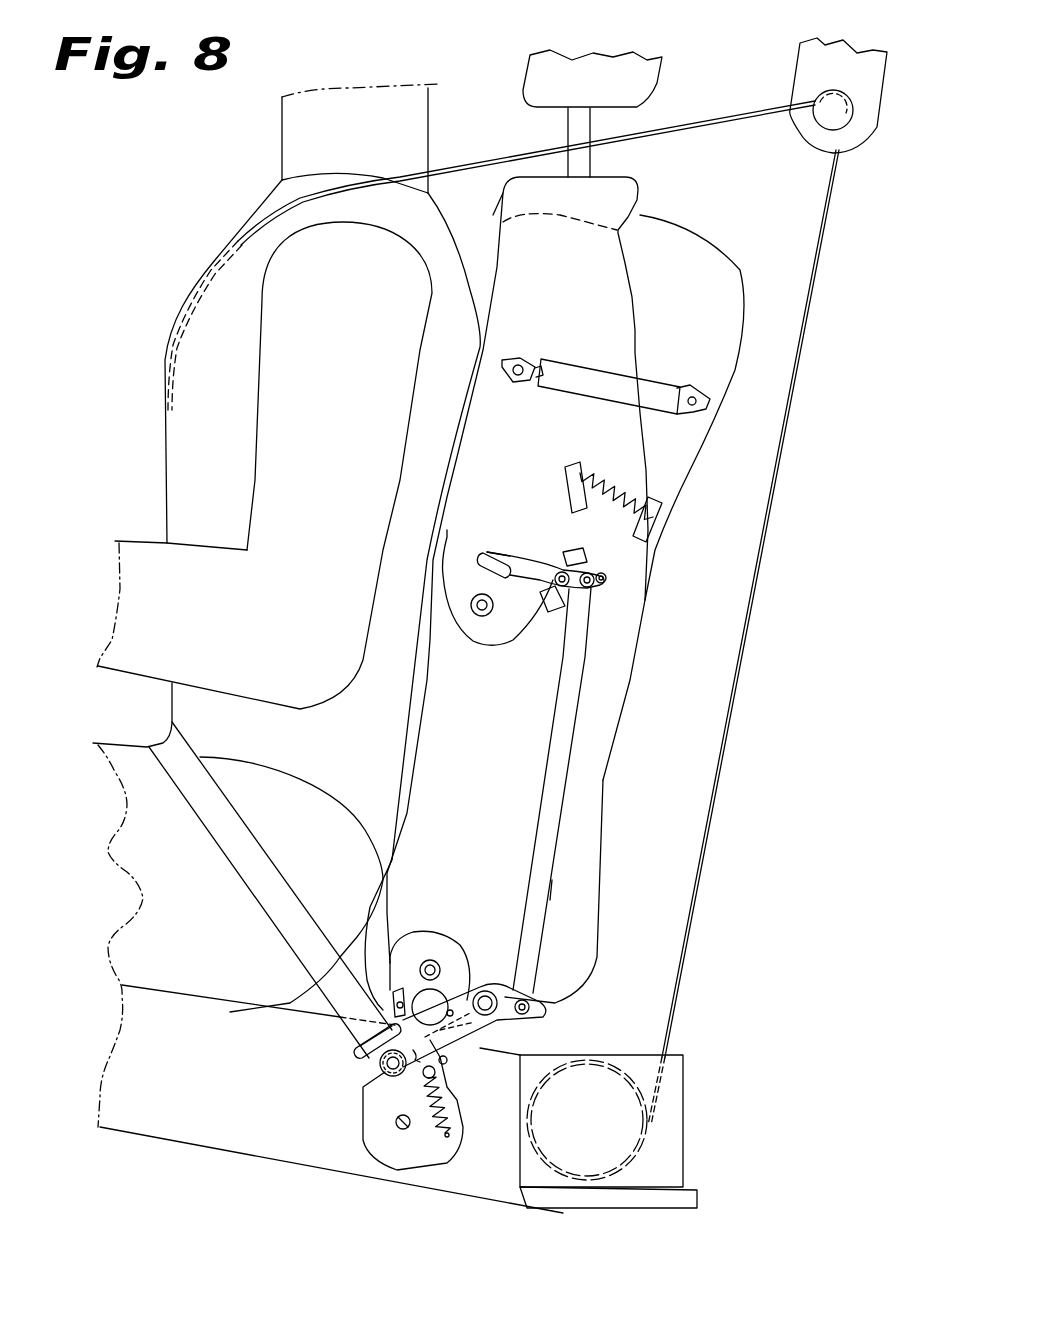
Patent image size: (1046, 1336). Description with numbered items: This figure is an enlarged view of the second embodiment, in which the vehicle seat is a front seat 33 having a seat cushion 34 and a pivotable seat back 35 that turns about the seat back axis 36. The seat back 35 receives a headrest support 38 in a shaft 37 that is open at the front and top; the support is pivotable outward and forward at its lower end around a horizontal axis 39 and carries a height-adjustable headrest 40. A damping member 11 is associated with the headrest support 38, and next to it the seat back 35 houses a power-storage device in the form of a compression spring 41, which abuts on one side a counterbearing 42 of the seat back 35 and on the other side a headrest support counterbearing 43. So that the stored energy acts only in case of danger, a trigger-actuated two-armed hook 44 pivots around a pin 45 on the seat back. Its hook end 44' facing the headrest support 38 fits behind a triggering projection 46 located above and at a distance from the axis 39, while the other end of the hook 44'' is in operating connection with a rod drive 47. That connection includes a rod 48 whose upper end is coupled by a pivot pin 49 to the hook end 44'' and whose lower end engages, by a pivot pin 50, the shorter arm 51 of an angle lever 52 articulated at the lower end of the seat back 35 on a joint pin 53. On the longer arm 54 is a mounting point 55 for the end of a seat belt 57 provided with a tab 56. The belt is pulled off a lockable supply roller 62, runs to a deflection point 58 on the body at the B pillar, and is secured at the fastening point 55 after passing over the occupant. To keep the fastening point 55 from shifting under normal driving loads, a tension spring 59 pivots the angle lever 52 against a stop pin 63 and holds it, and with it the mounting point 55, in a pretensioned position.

The damping member 11 is at (645, 388).
The front seat 33 is at (150, 1150).
The seat cushion 34 is at (140, 1095).
The seat back 35 is at (590, 790).
The seat back axis 36 is at (440, 970).
The shaft 37 is at (635, 325).
The headrest support 38 is at (563, 287).
The horizontal axis 39 is at (480, 616).
The headrest 40 is at (603, 75).
The spring 41 is at (603, 500).
The counterbearing 42 is at (655, 521).
The headrest support counterbearing 43 is at (613, 470).
The hook 44 is at (545, 528).
The hook end 44' is at (483, 514).
The other end of the hook 44'' is at (726, 576).
The pin 45 is at (547, 592).
The triggering projection 46 is at (483, 565).
The rod drive 47 is at (560, 891).
The rod 48 is at (563, 712).
The pivot pin 49 is at (605, 585).
The pivot pin 50 is at (545, 1013).
The arm 51 is at (530, 1005).
The angle lever 52 is at (484, 1060).
The joint pin 53 is at (493, 1017).
The arm 54 is at (431, 932).
The mounting point 55 is at (383, 1067).
The tab 56 is at (370, 1063).
The seat belt 57 is at (685, 933).
The deflection point 58 is at (833, 108).
The tension spring 59 is at (440, 1040).
The supply roller 62 is at (623, 1120).
The stop pin 63 is at (478, 1050).